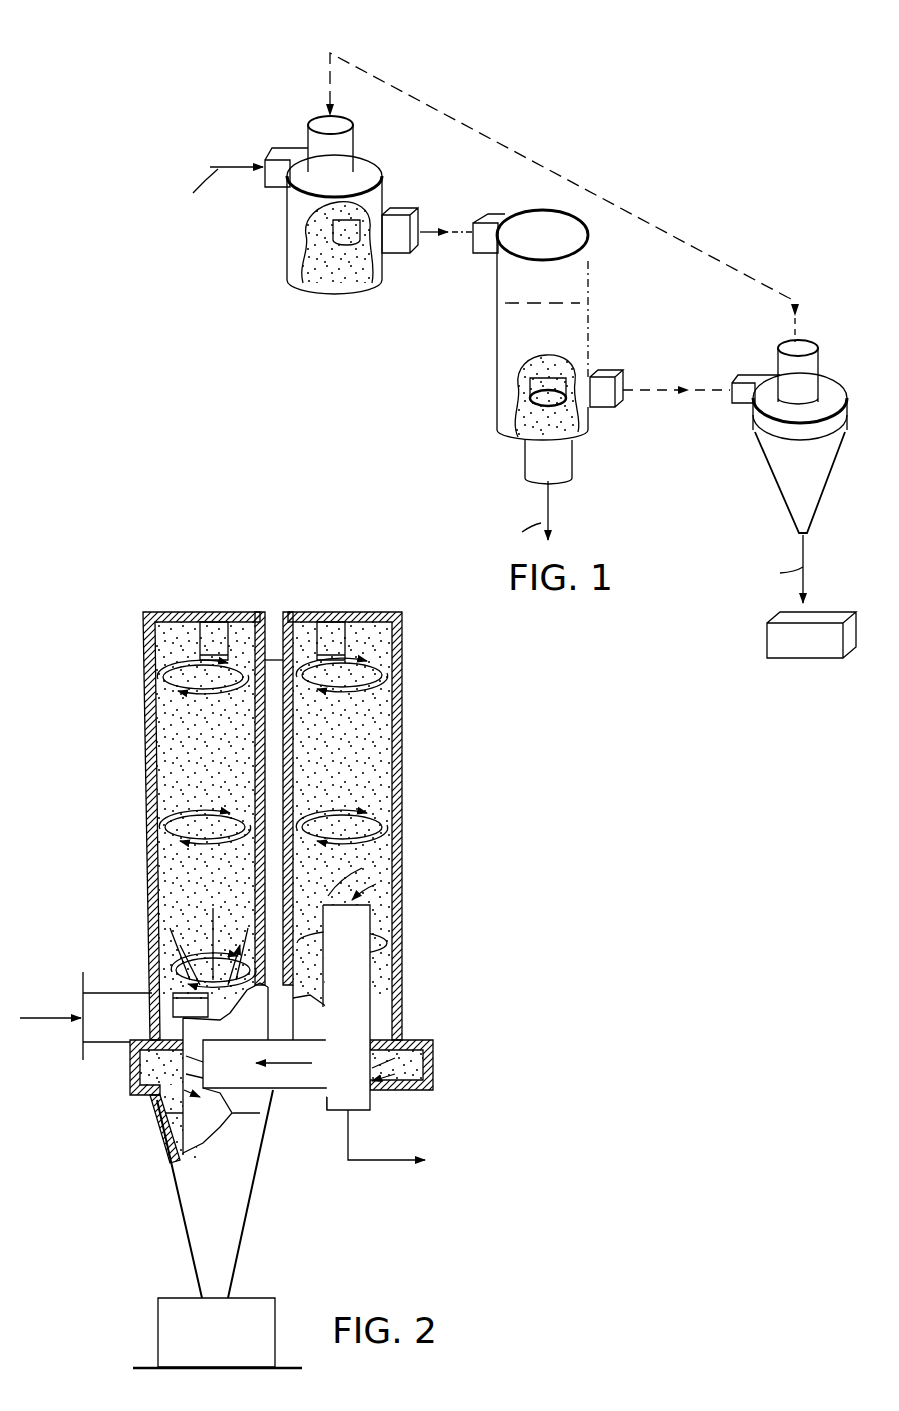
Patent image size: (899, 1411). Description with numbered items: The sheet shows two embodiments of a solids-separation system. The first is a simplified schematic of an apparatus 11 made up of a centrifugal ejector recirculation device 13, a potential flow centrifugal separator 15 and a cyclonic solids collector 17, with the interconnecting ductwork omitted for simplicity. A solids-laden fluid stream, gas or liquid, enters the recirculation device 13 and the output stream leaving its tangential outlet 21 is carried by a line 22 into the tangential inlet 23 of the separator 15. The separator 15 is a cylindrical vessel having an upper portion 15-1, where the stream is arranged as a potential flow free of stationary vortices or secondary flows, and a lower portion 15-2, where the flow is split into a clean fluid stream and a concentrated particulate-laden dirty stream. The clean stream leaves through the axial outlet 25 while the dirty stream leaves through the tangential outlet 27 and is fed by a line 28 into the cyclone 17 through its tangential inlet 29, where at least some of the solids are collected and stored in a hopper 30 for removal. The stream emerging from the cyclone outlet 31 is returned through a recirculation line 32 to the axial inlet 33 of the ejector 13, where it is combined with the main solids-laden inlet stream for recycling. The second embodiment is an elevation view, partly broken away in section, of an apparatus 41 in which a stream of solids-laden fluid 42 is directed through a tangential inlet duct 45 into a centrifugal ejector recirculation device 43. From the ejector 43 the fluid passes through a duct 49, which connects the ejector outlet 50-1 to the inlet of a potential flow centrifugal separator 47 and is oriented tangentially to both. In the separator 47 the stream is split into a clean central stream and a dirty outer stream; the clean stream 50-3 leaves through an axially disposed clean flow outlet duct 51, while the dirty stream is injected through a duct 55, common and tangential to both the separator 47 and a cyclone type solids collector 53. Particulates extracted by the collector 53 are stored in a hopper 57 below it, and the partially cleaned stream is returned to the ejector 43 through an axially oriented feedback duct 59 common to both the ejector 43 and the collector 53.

In FIG. 1, the apparatus 11 is at (422, 462).
In FIG. 1, the centrifugal ejector recirculation device 13 is at (322, 290).
In FIG. 1, the potential flow centrifugal separator 15 is at (487, 325).
In FIG. 1, the upper portion 15-1 is at (572, 282).
In FIG. 1, the lower portion 15-2 is at (584, 376).
In FIG. 1, the cyclonic solids collector 17 is at (795, 482).
In FIG. 1, the tangential outlet 21 is at (400, 215).
In FIG. 1, the line 22 is at (442, 238).
In FIG. 1, the tangential inlet 23 is at (497, 216).
In FIG. 1, the axial outlet 25 is at (572, 466).
In FIG. 1, the tangential outlet 27 is at (605, 403).
In FIG. 1, the line 28 is at (657, 388).
In FIG. 1, the tangential inlet 29 is at (740, 382).
In FIG. 1, the hopper 30 is at (766, 642).
In FIG. 1, the outlet 31 is at (812, 368).
In FIG. 1, the recirculation line 32 is at (541, 167).
In FIG. 1, the axial inlet 33 is at (345, 152).
In FIG. 2, the apparatus 41 is at (90, 1198).
In FIG. 2, the stream of solids-laden fluid 42 is at (48, 1013).
In FIG. 2, the centrifugal ejector recirculation device 43 is at (175, 767).
In FIG. 2, the tangential inlet duct 45 is at (115, 1002).
In FIG. 2, the potential flow centrifugal separator 47 is at (383, 770).
In FIG. 2, the duct 49 is at (273, 620).
In FIG. 2, the outlet 50-1 is at (216, 631).
In FIG. 2, the clean stream 50-3 is at (373, 1161).
In FIG. 2, the clean flow outlet duct 51 is at (366, 1098).
In FIG. 2, the cyclone type solids collector 53 is at (240, 1143).
In FIG. 2, the duct 55 is at (312, 1080).
In FIG. 2, the hopper 57 is at (238, 1301).
In FIG. 2, the feedback duct 59 is at (172, 1002).